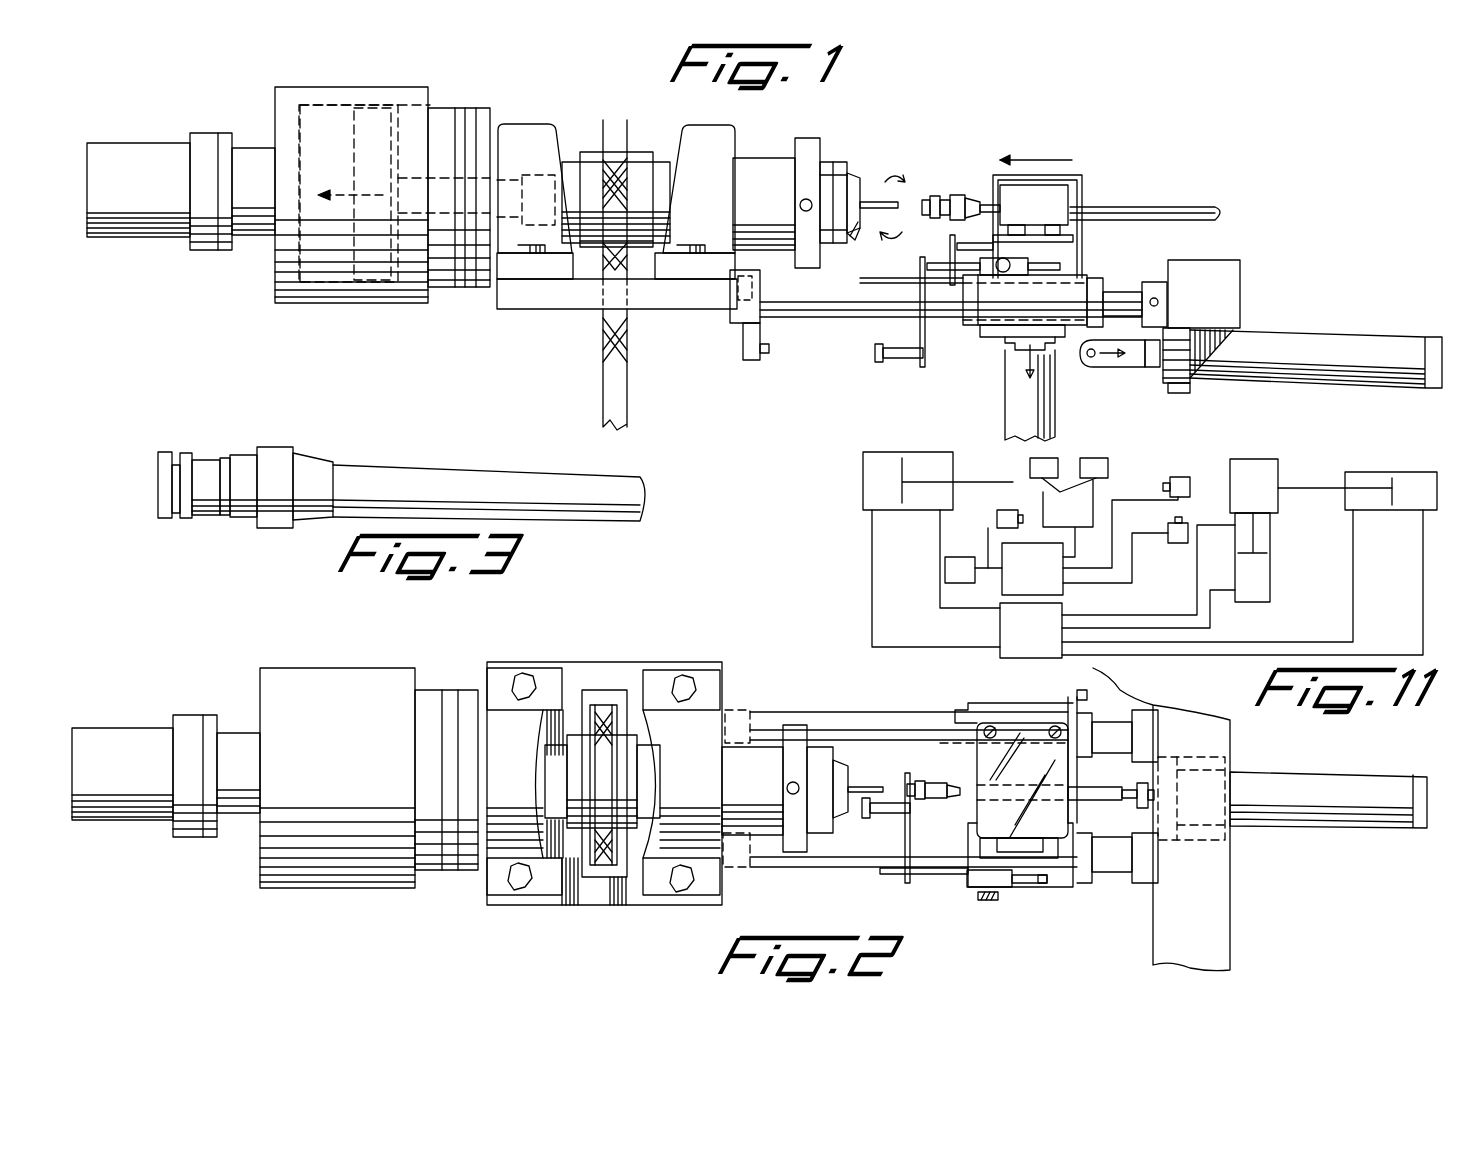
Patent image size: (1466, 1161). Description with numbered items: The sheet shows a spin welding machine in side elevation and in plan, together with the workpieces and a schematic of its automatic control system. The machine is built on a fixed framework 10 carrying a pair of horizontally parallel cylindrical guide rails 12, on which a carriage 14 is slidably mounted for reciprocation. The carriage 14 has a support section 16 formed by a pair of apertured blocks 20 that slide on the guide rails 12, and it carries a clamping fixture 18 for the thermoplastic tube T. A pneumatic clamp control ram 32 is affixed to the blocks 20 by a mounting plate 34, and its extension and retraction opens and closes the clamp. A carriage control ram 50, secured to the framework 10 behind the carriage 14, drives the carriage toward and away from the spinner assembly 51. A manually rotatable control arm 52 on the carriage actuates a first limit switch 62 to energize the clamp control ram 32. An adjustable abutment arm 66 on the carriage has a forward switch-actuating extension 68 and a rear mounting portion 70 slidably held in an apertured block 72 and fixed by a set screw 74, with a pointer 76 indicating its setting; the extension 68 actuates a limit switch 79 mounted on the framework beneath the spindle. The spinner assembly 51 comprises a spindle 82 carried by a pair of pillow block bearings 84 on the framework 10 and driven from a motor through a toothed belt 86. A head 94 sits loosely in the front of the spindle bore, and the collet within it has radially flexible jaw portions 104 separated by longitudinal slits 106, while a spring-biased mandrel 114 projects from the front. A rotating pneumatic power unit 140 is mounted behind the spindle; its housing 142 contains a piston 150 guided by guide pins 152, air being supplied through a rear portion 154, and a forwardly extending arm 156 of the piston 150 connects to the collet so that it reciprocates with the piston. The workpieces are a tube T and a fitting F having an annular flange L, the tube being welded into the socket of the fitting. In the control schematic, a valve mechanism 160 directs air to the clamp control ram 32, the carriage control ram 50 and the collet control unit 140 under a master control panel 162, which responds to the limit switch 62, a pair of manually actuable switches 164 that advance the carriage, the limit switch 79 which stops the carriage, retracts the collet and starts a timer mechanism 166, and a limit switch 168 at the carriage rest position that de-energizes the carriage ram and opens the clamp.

In FIG. 1, the fixed framework 10 is at (530, 318).
In FIG. 2, the fixed framework 10 is at (1222, 858).
In FIG. 1, the guide rails 12 is at (795, 313).
In FIG. 2, the guide rails 12 is at (838, 712).
In FIG. 1, the carriage 14 is at (1086, 242).
In FIG. 11, the carriage 14 is at (1270, 460).
In FIG. 2, the carriage 14 is at (1010, 704).
In FIG. 1, the support section 16 is at (1080, 282).
In FIG. 2, the support section 16 is at (1045, 705).
In FIG. 1, the clamping fixture 18 is at (1005, 188).
In FIG. 1, the apertured blocks 20 is at (985, 300).
In FIG. 2, the apertured blocks 20 is at (1065, 875).
In FIG. 1, the clamp control ram 32 is at (1055, 392).
In FIG. 11, the clamp control ram 32 is at (1272, 572).
In FIG. 1, the mounting plate 34 is at (992, 337).
In FIG. 1, the carriage control ram 50 is at (1358, 338).
In FIG. 11, the carriage control ram 50 is at (1400, 475).
In FIG. 2, the carriage control ram 50 is at (1382, 828).
In FIG. 1, the spinner assembly 51 is at (858, 182).
In FIG. 2, the spinner assembly 51 is at (800, 722).
In FIG. 1, the control arm 52 is at (1083, 174).
In FIG. 2, the control arm 52 is at (990, 730).
In FIG. 11, the first limit switch 62 is at (1178, 545).
In FIG. 1, the abutment arm 66 is at (928, 352).
In FIG. 2, the abutment arm 66 is at (905, 852).
In FIG. 1, the switch-actuating extension 68 is at (900, 360).
In FIG. 2, the switch-actuating extension 68 is at (880, 815).
In FIG. 1, the rear mounting portion 70 is at (940, 265).
In FIG. 2, the rear mounting portion 70 is at (935, 876).
In FIG. 2, the apertured block 72 is at (1010, 887).
In FIG. 1, the set screw 74 is at (1010, 262).
In FIG. 2, the set screw 74 is at (987, 901).
In FIG. 1, the pointer 76 is at (1058, 268).
In FIG. 2, the pointer 76 is at (1042, 883).
In FIG. 1, the limit switch 79 is at (757, 362).
In FIG. 11, the limit switch 79 is at (997, 517).
In FIG. 1, the spindle 82 is at (745, 160).
In FIG. 1, the pillow block bearings 84 is at (545, 122).
In FIG. 2, the pillow block bearings 84 is at (535, 670).
In FIG. 1, the belt 86 is at (618, 378).
In FIG. 2, the belt 86 is at (600, 707).
In FIG. 1, the head 94 is at (845, 170).
In FIG. 1, the jaw portions 104 is at (853, 215).
In FIG. 1, the longitudinal slits 106 is at (850, 222).
In FIG. 2, the longitudinal slits 106 is at (840, 766).
In FIG. 1, the mandrel 114 is at (880, 215).
In FIG. 2, the mandrel 114 is at (860, 788).
In FIG. 1, the power unit 140 is at (312, 78).
In FIG. 11, the power unit 140 is at (863, 485).
In FIG. 2, the power unit 140 is at (350, 876).
In FIG. 1, the housing 142 is at (405, 98).
In FIG. 1, the piston 150 is at (382, 280).
In FIG. 1, the guide pins 152 is at (320, 262).
In FIG. 1, the rear portion 154 is at (143, 152).
In FIG. 2, the rear portion 154 is at (128, 733).
In FIG. 1, the arm 156 is at (460, 215).
In FIG. 11, the valve mechanism 160 is at (1000, 627).
In FIG. 11, the master control panel 162 is at (1055, 583).
In FIG. 11, the manually actuable switches 164 is at (1104, 445).
In FIG. 11, the timer mechanism 166 is at (950, 575).
In FIG. 11, the limit switch 168 is at (1182, 476).
In FIG. 2, the limit switch 168 is at (1088, 697).
In FIG. 1, the fitting F is at (950, 198).
In FIG. 3, the fitting F is at (222, 440).
In FIG. 2, the fitting F is at (935, 780).
In FIG. 3, the annular flange L is at (272, 448).
In FIG. 1, the tube T is at (1150, 208).
In FIG. 3, the tube T is at (410, 473).
In FIG. 2, the tube T is at (1100, 805).